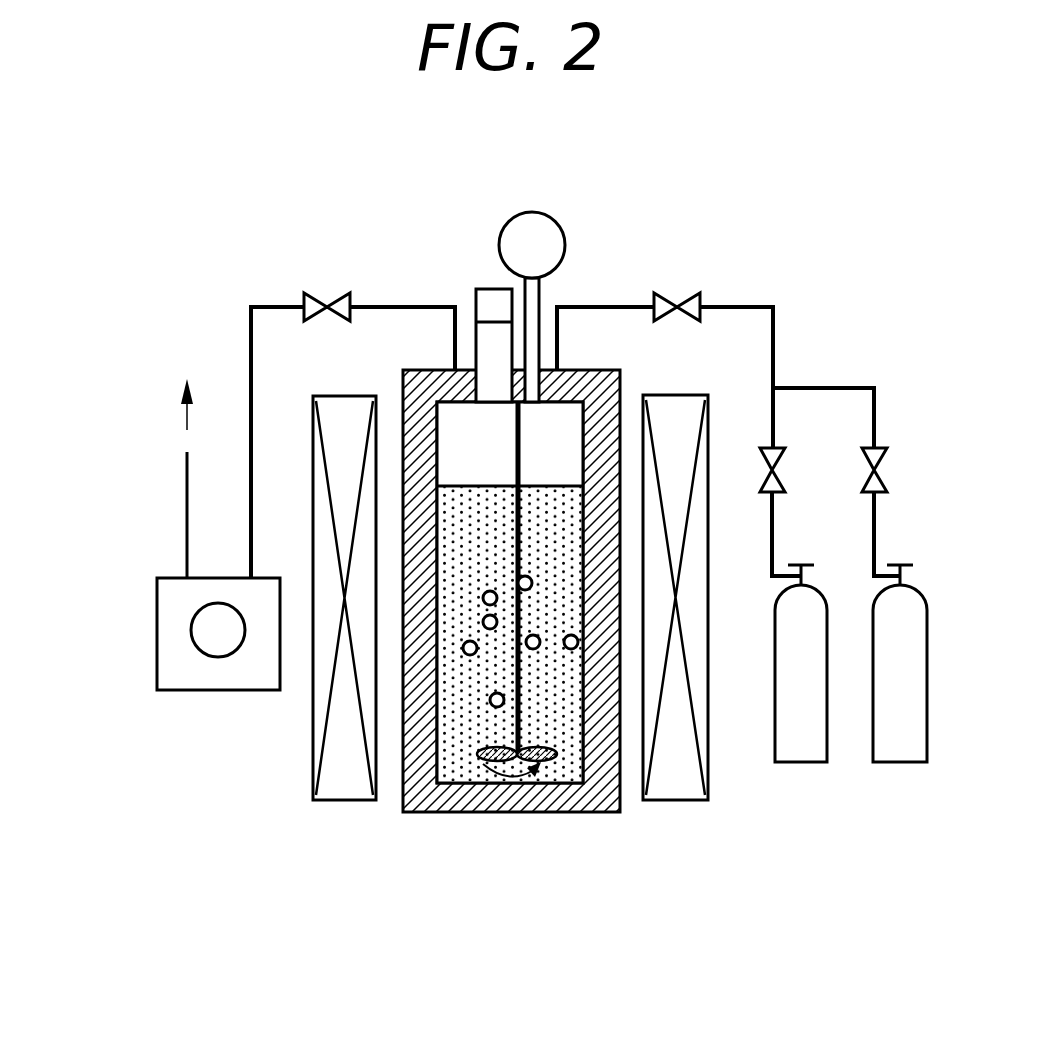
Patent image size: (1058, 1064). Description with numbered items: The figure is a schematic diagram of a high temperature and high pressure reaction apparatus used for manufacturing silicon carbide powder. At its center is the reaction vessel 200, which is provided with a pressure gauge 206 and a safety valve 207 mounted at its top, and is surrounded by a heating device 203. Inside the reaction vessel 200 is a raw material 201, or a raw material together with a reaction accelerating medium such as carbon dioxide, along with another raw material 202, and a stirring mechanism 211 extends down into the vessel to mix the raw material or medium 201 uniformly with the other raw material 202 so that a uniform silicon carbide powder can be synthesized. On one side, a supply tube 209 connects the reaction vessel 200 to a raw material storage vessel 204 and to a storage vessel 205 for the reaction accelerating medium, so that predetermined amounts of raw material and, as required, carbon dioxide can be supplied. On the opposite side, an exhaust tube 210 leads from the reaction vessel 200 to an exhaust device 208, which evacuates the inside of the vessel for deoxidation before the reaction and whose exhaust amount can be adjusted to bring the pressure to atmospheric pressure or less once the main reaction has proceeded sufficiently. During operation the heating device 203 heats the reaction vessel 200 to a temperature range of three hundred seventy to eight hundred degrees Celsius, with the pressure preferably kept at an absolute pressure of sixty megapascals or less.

The reaction vessel 200 is at (412, 812).
The raw material 201 is at (460, 775).
The another raw material 202 is at (534, 650).
The heating device 203 is at (708, 417).
The raw material storage vessel 204 is at (803, 752).
The storage vessel for a reaction accelerating medium 205 is at (903, 752).
The pressure gauge 206 is at (535, 215).
The safety valve 207 is at (490, 298).
The exhaust device 208 is at (195, 668).
The supply tube 209 is at (773, 332).
The exhaust tube 210 is at (388, 307).
The stirring mechanism 211 is at (487, 762).